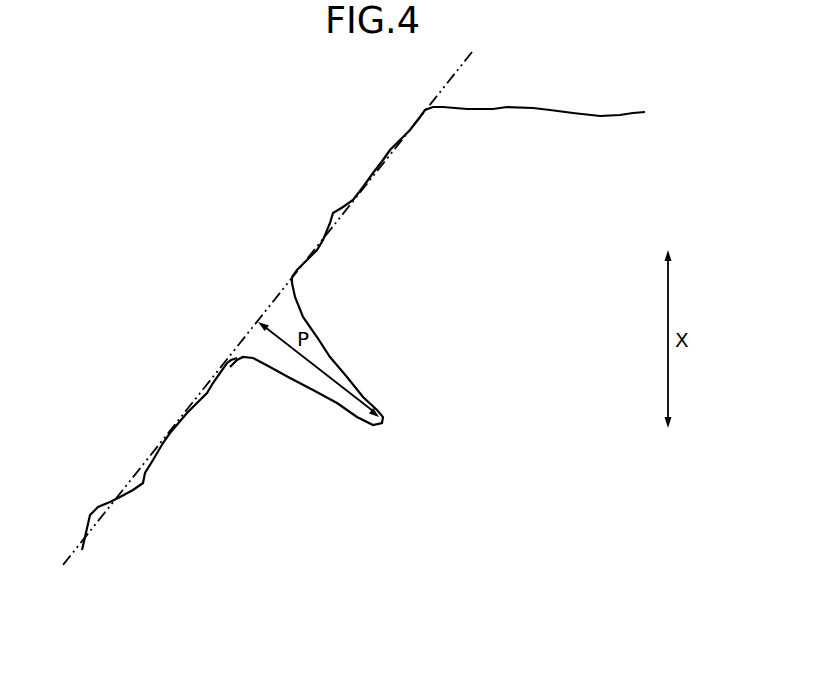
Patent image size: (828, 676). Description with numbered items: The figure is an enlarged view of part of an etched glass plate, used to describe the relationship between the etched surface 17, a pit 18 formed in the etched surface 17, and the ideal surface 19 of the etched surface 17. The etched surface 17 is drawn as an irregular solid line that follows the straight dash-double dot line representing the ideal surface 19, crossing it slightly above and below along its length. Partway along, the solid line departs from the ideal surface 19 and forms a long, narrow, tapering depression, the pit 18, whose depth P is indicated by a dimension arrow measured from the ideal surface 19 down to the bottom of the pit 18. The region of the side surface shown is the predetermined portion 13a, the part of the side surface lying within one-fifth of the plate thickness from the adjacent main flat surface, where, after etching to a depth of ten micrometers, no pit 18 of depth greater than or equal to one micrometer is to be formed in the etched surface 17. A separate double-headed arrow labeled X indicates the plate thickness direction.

The predetermined portion 13a is at (328, 209).
The etched surface 17 is at (336, 328).
The pit 18 is at (337, 357).
The ideal surface 19 is at (145, 463).